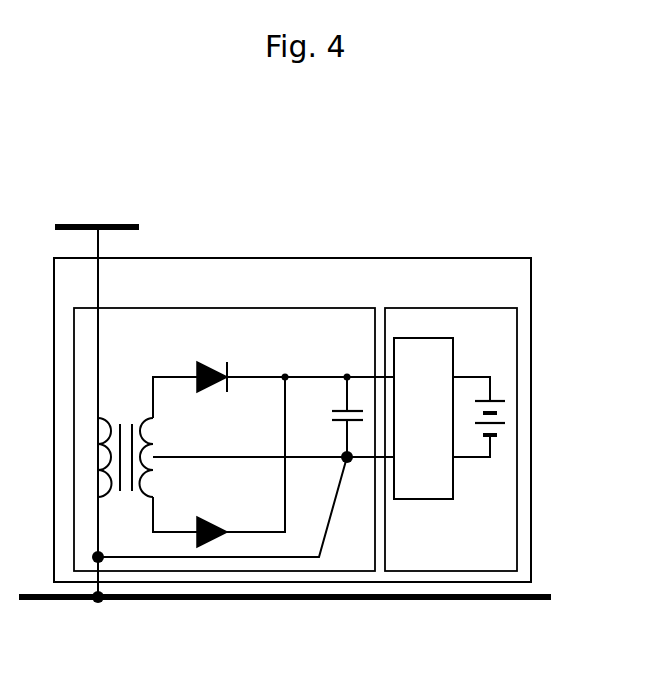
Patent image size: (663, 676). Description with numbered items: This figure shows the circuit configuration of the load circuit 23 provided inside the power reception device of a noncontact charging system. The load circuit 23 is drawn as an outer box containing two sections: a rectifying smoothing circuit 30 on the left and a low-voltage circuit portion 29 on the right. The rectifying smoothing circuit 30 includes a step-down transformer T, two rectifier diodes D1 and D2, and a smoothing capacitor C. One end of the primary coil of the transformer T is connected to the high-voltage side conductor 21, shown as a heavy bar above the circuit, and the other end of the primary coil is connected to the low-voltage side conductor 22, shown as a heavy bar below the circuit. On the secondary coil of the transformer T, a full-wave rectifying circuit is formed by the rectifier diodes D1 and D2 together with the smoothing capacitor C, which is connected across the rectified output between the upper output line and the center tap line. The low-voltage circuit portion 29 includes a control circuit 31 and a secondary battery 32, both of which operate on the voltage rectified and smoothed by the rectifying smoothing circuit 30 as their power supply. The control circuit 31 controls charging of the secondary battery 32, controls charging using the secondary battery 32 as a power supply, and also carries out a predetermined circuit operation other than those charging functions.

The high-voltage side conductor 21 is at (113, 223).
The low-voltage side conductor 22 is at (155, 600).
The load circuit 23 is at (390, 258).
The low-voltage circuit portion 29 is at (517, 308).
The rectifying smoothing circuit 30 is at (290, 308).
The control circuit 31 is at (421, 338).
The secondary battery 32 is at (508, 413).
The step-down transformer T is at (125, 417).
The rectifier diode D1 is at (212, 362).
The rectifier diode D2 is at (212, 516).
The smoothing capacitor C is at (334, 417).